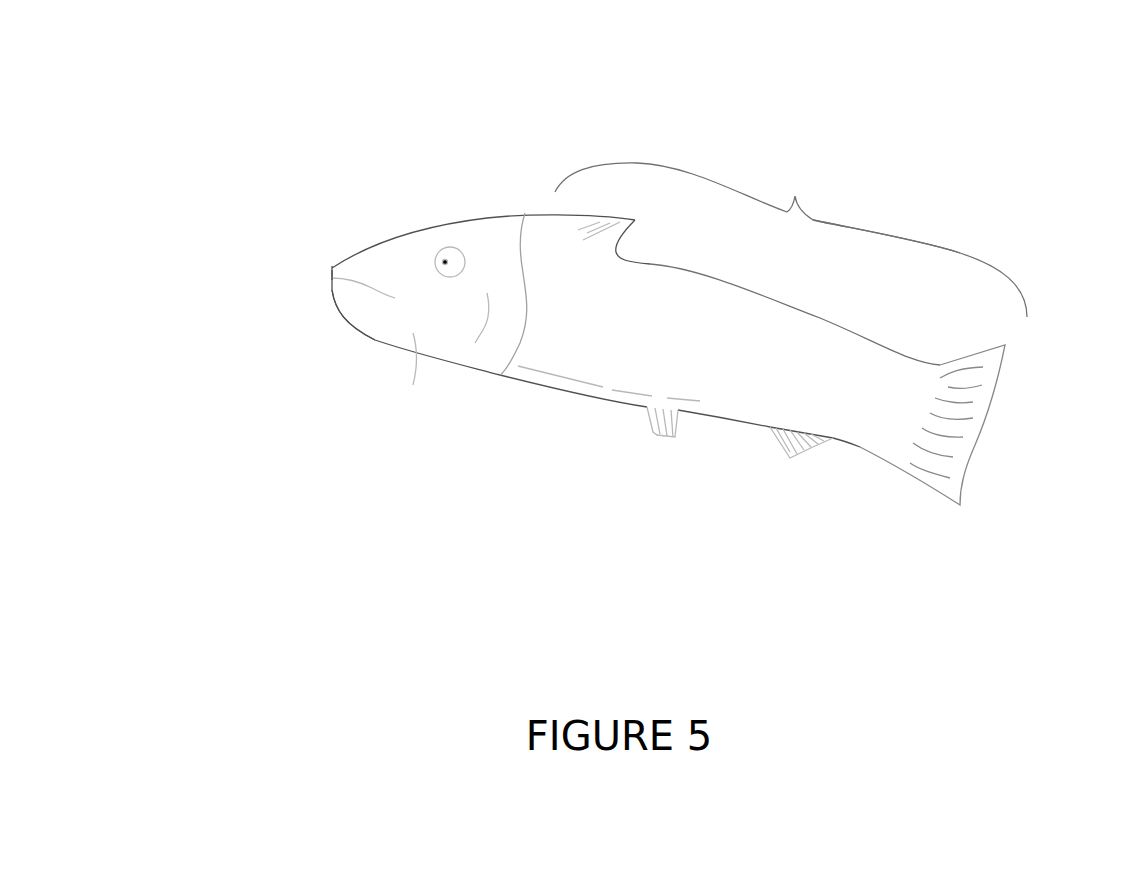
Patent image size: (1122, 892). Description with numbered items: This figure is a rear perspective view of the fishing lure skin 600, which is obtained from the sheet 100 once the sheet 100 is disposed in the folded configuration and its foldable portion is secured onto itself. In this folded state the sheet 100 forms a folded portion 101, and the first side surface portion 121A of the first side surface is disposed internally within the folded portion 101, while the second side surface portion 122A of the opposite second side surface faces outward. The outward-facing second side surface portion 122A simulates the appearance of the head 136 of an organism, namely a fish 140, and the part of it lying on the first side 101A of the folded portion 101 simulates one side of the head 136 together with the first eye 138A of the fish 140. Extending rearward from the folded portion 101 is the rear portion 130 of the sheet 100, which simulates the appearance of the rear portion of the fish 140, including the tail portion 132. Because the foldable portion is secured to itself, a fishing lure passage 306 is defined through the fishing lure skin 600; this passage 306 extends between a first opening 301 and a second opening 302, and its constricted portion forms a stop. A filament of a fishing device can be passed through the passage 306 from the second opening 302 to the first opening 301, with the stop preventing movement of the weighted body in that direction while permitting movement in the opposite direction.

The sheet 100 is at (716, 118).
The folded portion 101 is at (500, 212).
The first side of the folded portion 101A is at (795, 314).
The first side surface portion 121A is at (537, 362).
The second side surface portion 122A is at (413, 385).
The rear portion 130 is at (791, 240).
The tail portion 132 is at (979, 425).
The head 136 is at (367, 218).
The first eye 138A is at (438, 248).
The fish 140 is at (280, 347).
The first opening 301 is at (313, 280).
The second opening 302 is at (540, 268).
The fishing lure passage 306 is at (539, 303).
The fishing lure skin 600 is at (1007, 180).